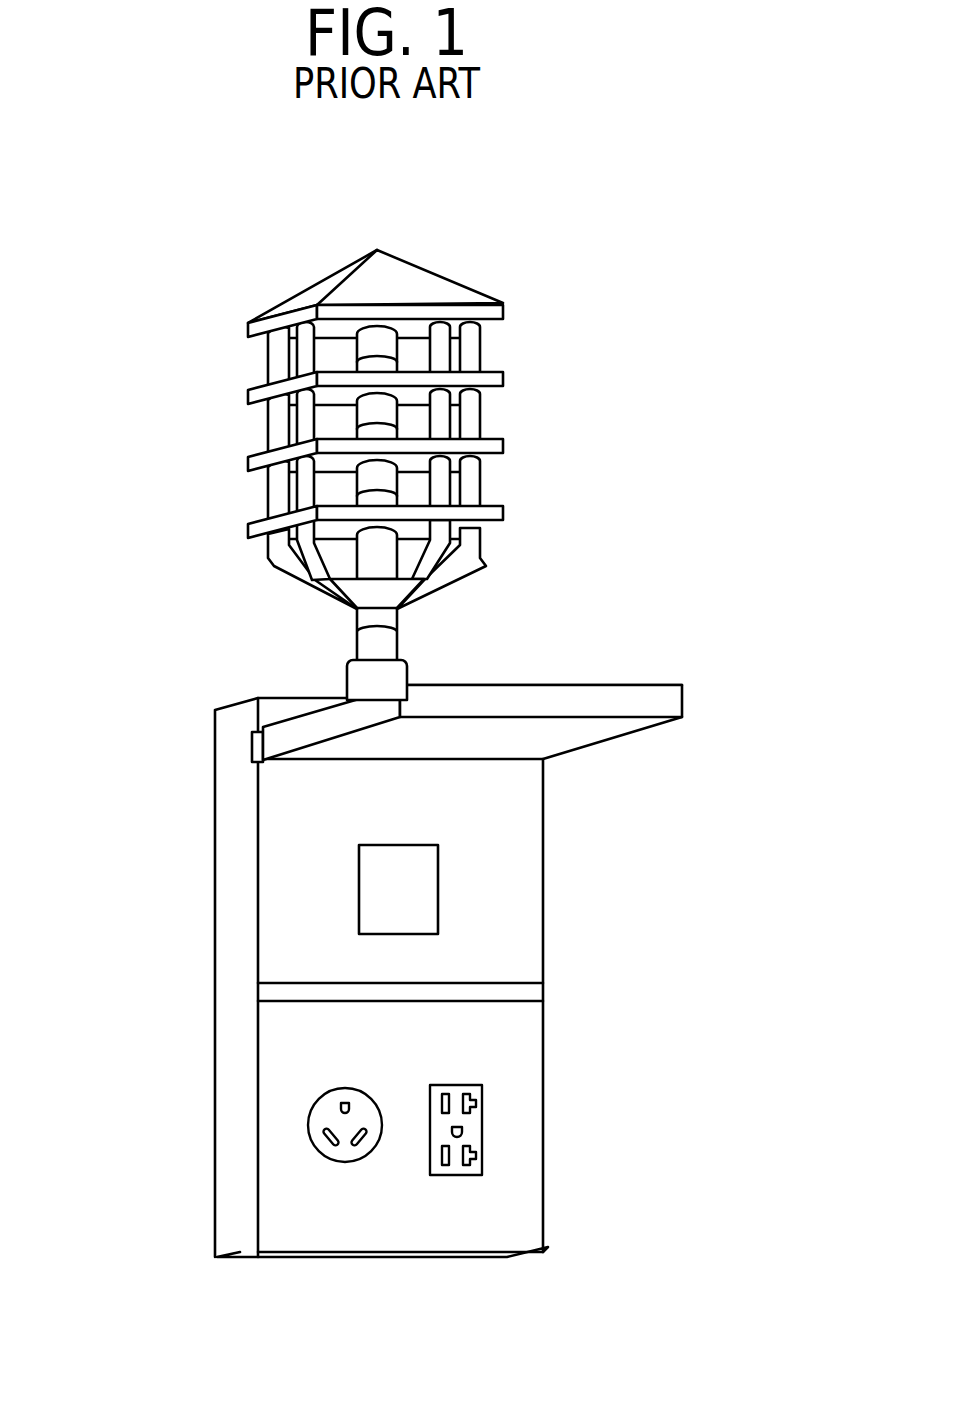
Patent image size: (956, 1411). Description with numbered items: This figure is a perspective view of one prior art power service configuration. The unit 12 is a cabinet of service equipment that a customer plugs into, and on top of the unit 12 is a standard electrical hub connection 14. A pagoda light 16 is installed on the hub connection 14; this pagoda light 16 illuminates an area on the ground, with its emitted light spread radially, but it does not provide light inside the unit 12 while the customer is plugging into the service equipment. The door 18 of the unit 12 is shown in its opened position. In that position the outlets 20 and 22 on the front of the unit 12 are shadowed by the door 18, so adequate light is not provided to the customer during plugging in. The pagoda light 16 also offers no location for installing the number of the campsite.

The unit 12 is at (215, 1028).
The electrical hub connection 14 is at (357, 678).
The pagoda light 16 is at (572, 344).
The door 18 is at (673, 703).
The outlet 20 is at (343, 1157).
The outlet 22 is at (460, 1165).